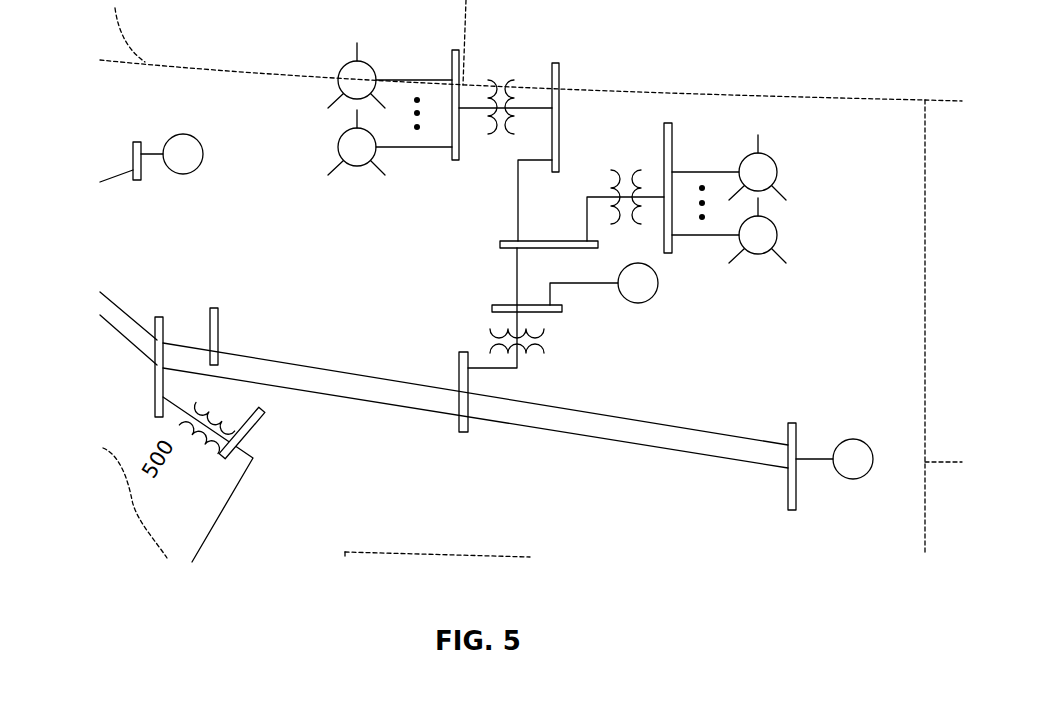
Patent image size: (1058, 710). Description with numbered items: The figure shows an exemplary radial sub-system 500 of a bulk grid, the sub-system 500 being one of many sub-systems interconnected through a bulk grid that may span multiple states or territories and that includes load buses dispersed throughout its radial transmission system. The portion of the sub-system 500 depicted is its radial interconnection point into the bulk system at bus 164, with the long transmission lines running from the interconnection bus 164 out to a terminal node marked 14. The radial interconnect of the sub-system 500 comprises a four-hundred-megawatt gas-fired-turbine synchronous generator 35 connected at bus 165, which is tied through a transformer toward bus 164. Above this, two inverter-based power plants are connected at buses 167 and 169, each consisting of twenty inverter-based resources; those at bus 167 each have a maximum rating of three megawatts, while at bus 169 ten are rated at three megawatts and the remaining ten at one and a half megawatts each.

The radial sub-system 500 is at (732, 63).
The bus 164 is at (489, 409).
The bus 165 is at (507, 294).
The bus 167 is at (698, 182).
The bus 169 is at (430, 98).
The bus 14 node 14 is at (830, 466).
The synchronous generator 35 is at (604, 284).